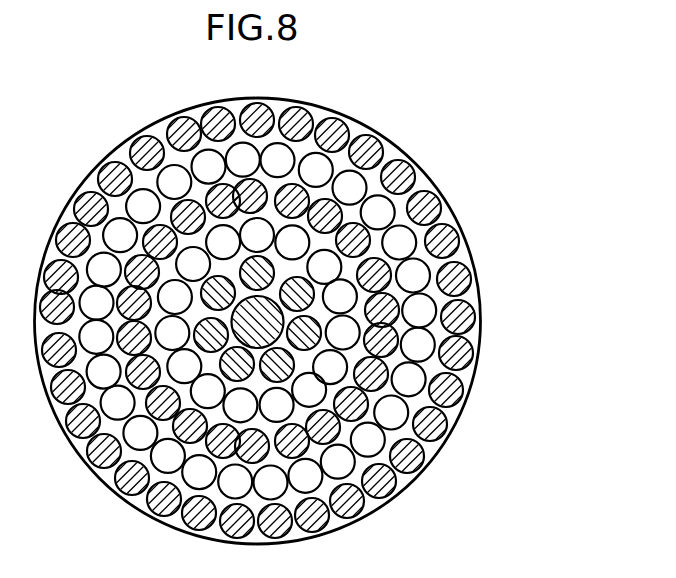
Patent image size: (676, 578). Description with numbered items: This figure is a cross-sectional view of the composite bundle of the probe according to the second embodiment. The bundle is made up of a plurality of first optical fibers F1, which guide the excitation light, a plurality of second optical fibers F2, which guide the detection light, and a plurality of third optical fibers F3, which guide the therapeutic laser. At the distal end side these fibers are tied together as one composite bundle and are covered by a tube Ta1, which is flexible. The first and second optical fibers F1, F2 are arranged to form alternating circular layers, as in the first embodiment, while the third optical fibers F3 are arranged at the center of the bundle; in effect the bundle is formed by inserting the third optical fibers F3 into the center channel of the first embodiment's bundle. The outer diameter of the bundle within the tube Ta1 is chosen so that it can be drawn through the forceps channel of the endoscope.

The first optical fibers F1 is at (452, 242).
The second optical fibers F2 is at (423, 283).
The third optical fibers F3 is at (310, 340).
The tube Ta1 is at (462, 427).